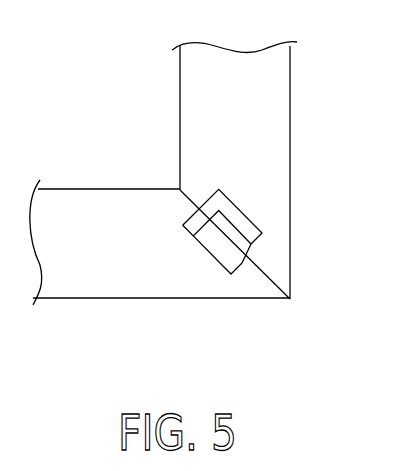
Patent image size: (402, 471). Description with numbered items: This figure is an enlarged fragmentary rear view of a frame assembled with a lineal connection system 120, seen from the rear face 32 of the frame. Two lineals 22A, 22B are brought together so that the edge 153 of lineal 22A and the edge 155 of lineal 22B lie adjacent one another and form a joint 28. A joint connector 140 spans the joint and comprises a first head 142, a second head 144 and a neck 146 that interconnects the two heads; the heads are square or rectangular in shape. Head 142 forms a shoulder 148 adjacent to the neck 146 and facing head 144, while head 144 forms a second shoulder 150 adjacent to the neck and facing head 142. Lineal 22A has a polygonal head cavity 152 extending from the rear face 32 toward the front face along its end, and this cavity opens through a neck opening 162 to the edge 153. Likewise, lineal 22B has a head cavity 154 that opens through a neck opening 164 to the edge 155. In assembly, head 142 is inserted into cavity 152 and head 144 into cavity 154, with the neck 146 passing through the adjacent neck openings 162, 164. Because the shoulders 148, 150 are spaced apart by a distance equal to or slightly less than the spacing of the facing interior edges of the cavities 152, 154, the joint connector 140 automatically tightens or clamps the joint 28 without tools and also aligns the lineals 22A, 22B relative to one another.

The lineal 22A is at (60, 299).
The lineal 22B is at (291, 60).
The joint 28 is at (277, 300).
The rear face 32 is at (101, 314).
The lineal connection system 120 is at (297, 308).
The joint connector 140 is at (188, 250).
The first head 142 is at (221, 262).
The second head 144 is at (243, 212).
The neck 146 is at (238, 238).
The shoulder 148 is at (186, 210).
The second shoulder 150 is at (227, 198).
The head cavity 152 is at (187, 236).
The edge 153 is at (259, 270).
The head cavity 154 is at (233, 205).
The edge 155 is at (200, 210).
The neck opening 162 is at (207, 270).
The neck opening 164 is at (232, 217).